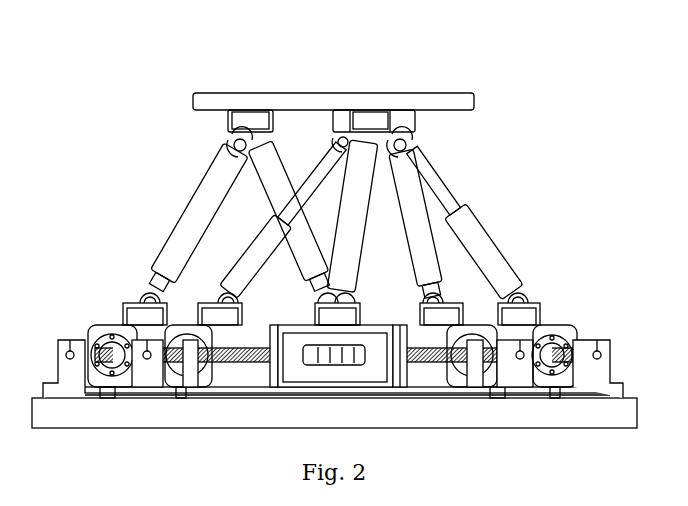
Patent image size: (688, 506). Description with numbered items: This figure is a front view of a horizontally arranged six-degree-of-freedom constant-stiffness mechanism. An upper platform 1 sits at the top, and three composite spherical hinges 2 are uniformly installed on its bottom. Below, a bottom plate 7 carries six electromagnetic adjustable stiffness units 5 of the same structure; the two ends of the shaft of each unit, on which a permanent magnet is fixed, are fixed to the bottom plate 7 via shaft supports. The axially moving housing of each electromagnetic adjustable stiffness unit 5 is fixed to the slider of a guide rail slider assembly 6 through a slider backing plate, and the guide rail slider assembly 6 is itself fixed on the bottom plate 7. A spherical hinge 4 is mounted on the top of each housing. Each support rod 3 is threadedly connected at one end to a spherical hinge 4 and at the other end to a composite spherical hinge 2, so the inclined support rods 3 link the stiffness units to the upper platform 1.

The upper platform 1 is at (467, 103).
The composite spherical hinge 2 is at (253, 120).
The support rod 3 is at (197, 220).
The spherical hinge 4 is at (520, 312).
The electromagnetic adjustable stiffness unit 5 is at (372, 342).
The guide rail slider assembly 6 is at (350, 393).
The bottom plate 7 is at (273, 408).